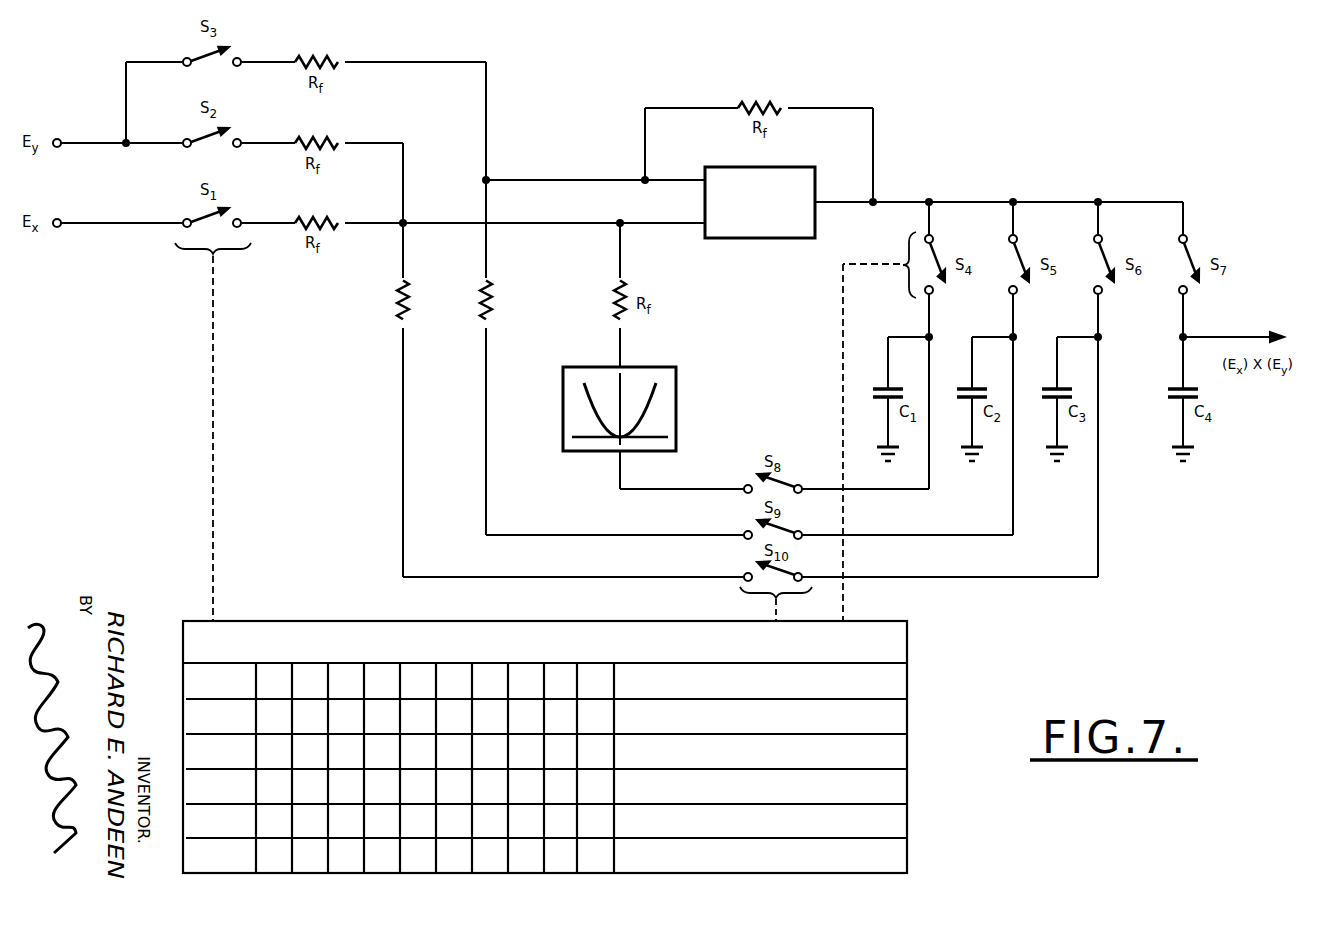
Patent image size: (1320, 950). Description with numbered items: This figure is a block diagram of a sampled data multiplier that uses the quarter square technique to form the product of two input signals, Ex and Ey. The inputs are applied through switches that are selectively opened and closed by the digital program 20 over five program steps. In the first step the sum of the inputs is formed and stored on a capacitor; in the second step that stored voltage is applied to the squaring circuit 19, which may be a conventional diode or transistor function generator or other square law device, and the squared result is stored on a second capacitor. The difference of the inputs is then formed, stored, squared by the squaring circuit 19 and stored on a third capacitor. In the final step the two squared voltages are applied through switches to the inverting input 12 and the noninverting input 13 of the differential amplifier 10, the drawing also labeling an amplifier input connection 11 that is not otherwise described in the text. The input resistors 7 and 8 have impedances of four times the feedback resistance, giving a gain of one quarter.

The input resistor 7 is at (398, 301).
The input resistor 8 is at (484, 296).
The differential amplifier 10 is at (757, 240).
The positive input of differential amplifier 11 is at (664, 227).
The inverting input 12 is at (666, 178).
The noninverting input 13 is at (851, 205).
The squaring circuit 19 is at (676, 390).
The digital program 20 is at (299, 620).